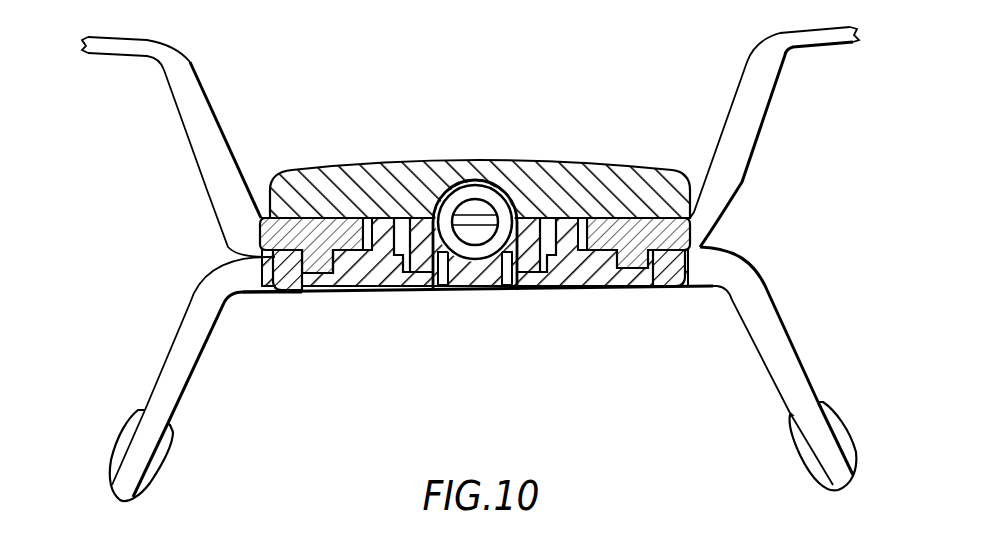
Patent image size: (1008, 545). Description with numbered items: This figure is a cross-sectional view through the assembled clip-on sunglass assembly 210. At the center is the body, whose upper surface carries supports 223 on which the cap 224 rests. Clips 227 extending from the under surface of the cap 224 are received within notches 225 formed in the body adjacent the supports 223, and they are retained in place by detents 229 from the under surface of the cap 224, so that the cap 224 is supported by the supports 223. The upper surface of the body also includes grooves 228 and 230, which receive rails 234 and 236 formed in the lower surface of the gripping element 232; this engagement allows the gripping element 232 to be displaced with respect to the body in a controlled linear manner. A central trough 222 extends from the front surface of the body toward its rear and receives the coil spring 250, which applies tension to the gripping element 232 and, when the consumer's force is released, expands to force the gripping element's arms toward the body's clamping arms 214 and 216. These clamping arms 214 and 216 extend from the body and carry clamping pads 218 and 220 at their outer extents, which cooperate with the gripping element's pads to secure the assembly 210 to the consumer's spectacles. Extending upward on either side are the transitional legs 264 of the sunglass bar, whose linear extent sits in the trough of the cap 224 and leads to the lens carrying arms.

The assembly 210 is at (346, 112).
The clamping arm 214 is at (192, 362).
The clamping arm 216 is at (777, 302).
The clamping pad 218 is at (136, 468).
The clamping pad 220 is at (827, 457).
The central trough 222 is at (472, 260).
The supports 223 is at (385, 222).
The cap 224 is at (610, 166).
The notches 225 is at (441, 262).
The clips 227 is at (415, 275).
The groove 228 is at (287, 290).
The detents 229 is at (410, 268).
The groove 230 is at (665, 280).
The gripping element 232 is at (262, 233).
The rail 234 is at (322, 262).
The rail 236 is at (640, 275).
The coil spring 250 is at (483, 185).
The transitional legs 264 is at (181, 110).